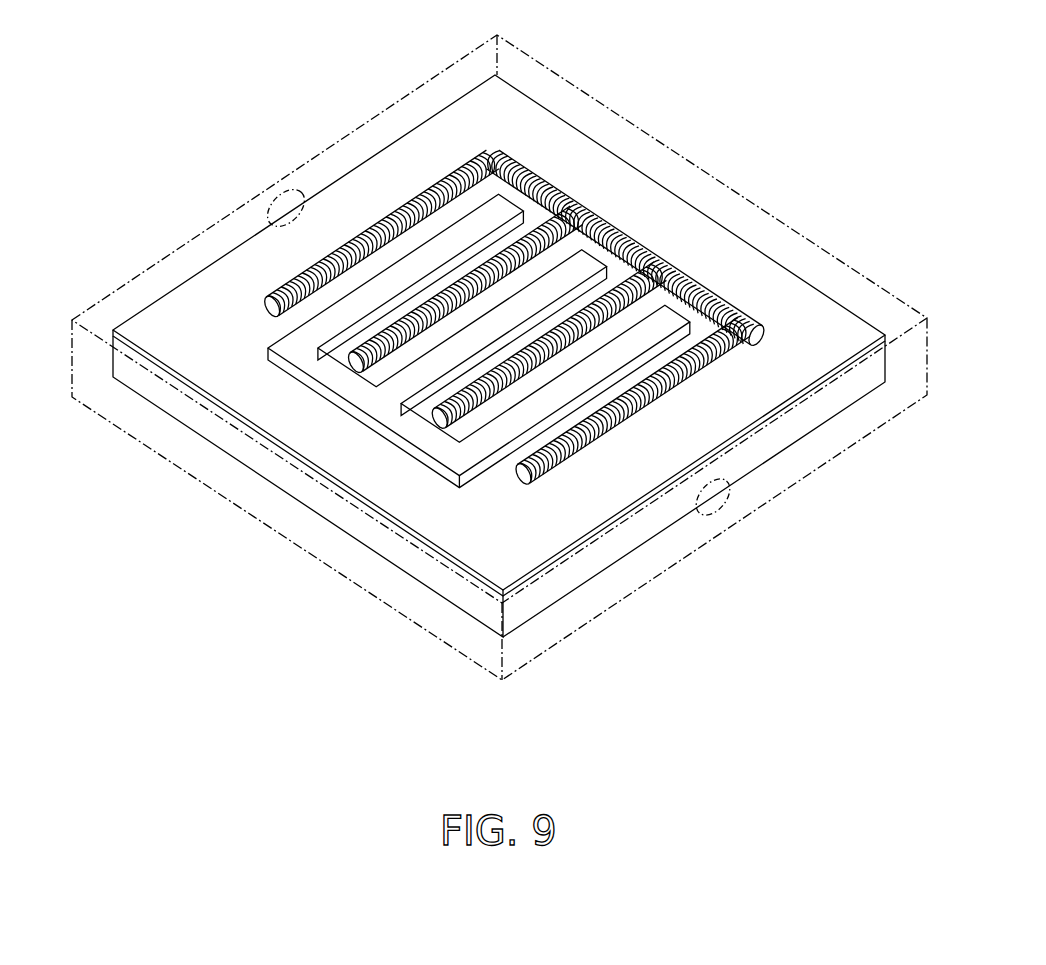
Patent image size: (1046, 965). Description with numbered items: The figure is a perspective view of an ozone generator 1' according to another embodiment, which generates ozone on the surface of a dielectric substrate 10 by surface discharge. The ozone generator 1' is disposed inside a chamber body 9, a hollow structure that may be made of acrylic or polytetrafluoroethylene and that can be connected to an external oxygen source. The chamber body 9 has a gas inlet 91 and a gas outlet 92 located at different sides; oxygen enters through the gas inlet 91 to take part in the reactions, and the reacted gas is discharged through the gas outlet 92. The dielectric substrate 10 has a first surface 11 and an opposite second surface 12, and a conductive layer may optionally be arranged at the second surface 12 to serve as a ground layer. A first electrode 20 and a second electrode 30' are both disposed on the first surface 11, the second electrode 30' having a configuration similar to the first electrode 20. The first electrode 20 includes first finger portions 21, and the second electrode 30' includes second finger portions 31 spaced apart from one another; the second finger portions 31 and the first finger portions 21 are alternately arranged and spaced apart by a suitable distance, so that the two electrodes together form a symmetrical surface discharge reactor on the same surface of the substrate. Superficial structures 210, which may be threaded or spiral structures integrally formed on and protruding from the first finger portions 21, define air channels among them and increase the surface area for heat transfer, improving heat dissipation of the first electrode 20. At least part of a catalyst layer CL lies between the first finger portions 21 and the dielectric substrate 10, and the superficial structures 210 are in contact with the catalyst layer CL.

The ozone generator 1' is at (514, 337).
The chamber body 9 is at (170, 250).
The gas inlet 91 is at (283, 205).
The gas outlet 92 is at (717, 499).
The dielectric substrate 10 is at (653, 527).
The first surface 11 is at (793, 400).
The second surface 12 is at (787, 447).
The first electrode 20 is at (483, 287).
The first finger portions 21 is at (439, 287).
The superficial structures 210 is at (438, 185).
The second finger portions 31 is at (602, 247).
The second electrode 30' is at (471, 401).
The catalyst layer CL is at (505, 122).